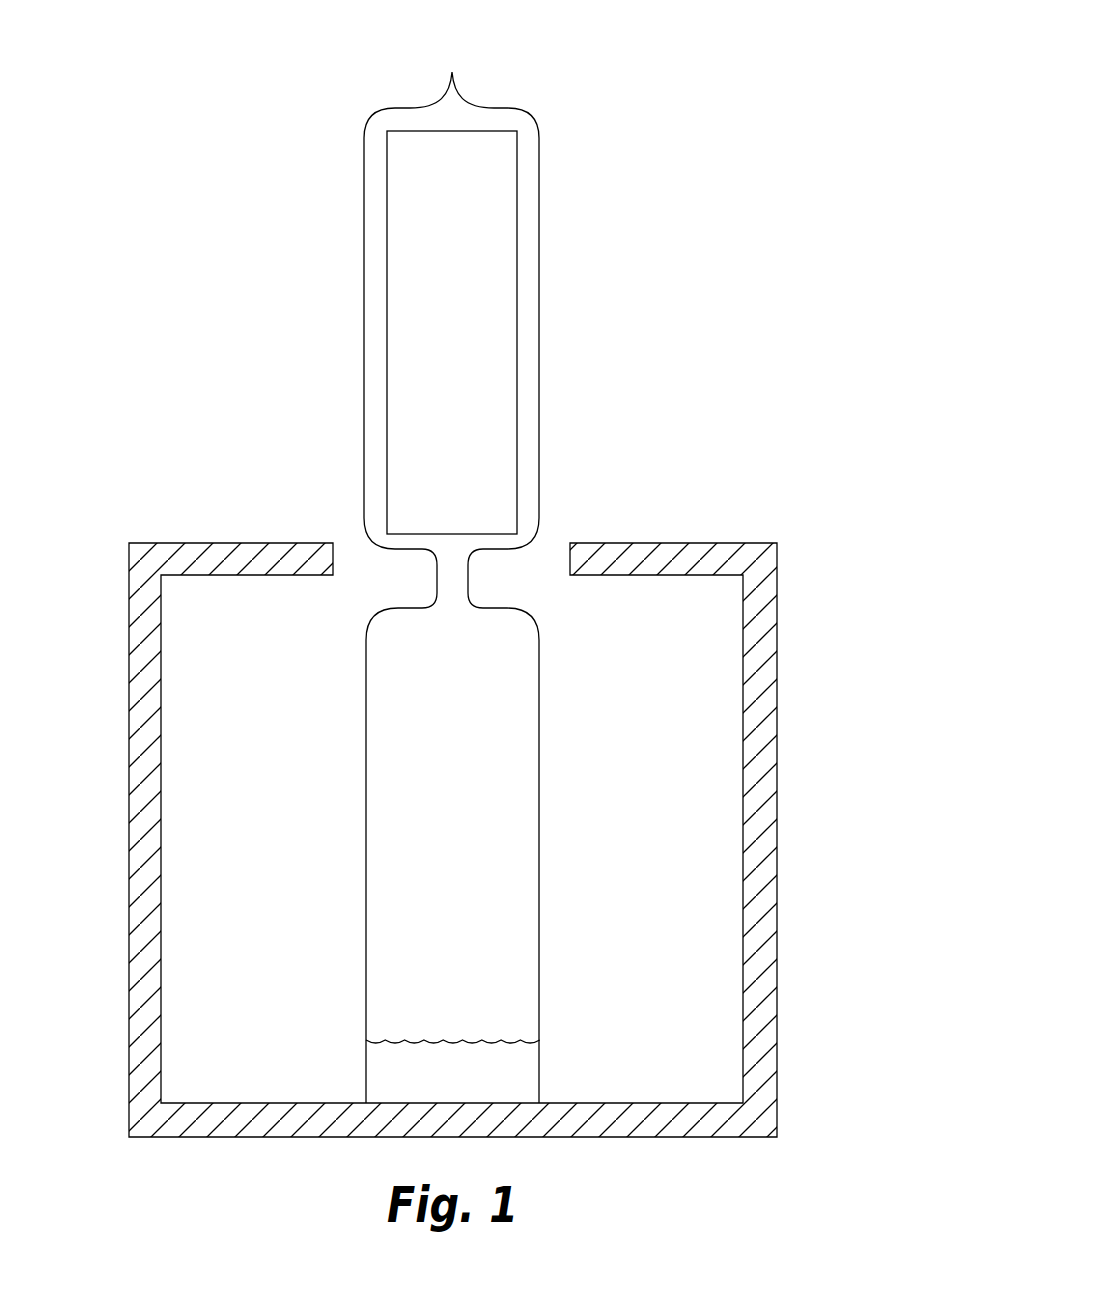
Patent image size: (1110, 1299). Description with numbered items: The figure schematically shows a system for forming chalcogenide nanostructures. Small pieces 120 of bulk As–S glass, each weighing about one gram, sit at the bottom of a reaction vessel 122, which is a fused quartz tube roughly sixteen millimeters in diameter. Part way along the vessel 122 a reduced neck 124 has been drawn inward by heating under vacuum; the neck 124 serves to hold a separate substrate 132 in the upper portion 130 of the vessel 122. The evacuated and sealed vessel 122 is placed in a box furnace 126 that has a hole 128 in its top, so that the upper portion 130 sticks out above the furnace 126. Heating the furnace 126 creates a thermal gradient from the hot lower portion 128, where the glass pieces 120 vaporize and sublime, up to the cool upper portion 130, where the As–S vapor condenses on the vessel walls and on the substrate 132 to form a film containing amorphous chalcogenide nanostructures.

The pieces of glass 120 is at (523, 1077).
The reaction vessel 122 is at (568, 664).
The reduced neck 124 is at (437, 578).
The box furnace 126 is at (778, 650).
The hole 128 is at (570, 557).
The upper portion 130 is at (501, 555).
The substrate 132 is at (457, 275).